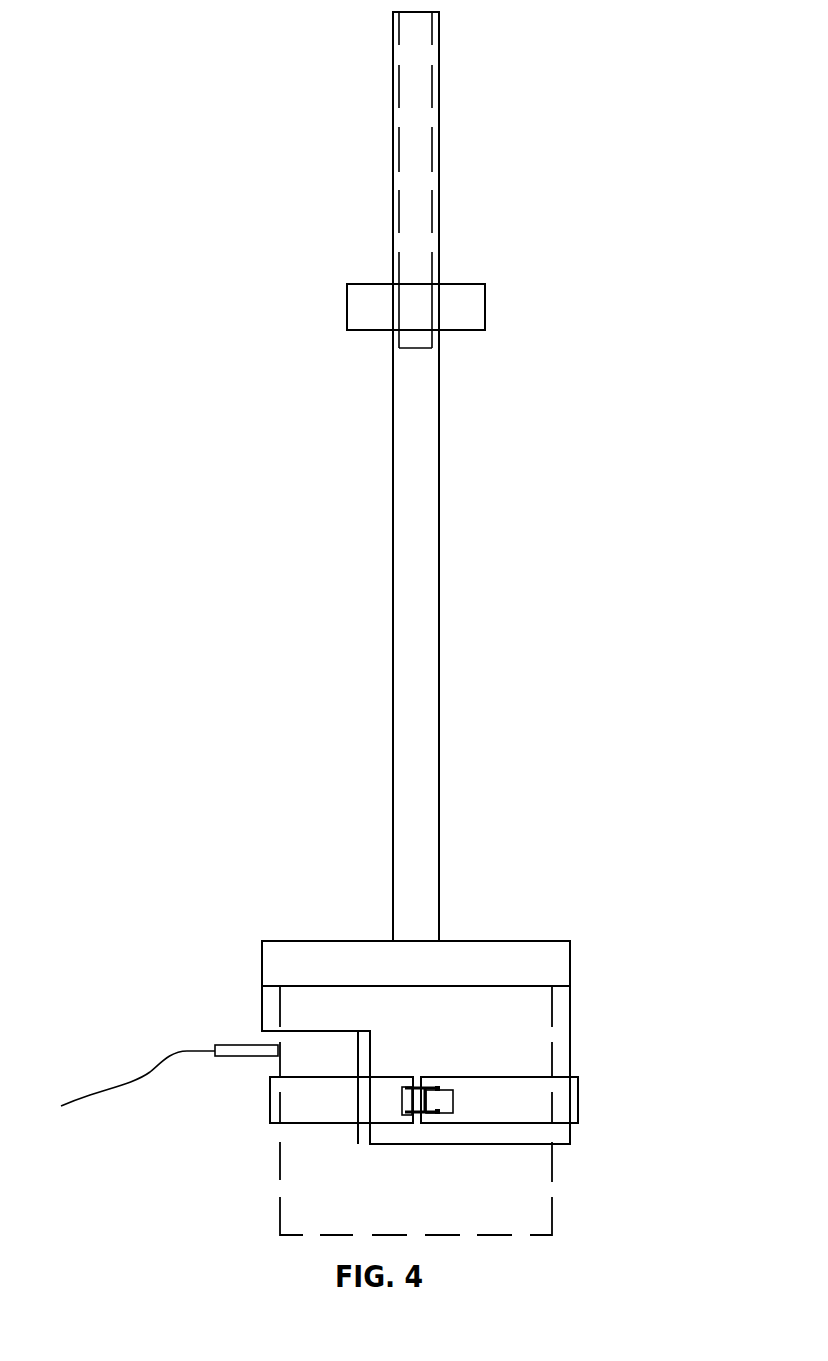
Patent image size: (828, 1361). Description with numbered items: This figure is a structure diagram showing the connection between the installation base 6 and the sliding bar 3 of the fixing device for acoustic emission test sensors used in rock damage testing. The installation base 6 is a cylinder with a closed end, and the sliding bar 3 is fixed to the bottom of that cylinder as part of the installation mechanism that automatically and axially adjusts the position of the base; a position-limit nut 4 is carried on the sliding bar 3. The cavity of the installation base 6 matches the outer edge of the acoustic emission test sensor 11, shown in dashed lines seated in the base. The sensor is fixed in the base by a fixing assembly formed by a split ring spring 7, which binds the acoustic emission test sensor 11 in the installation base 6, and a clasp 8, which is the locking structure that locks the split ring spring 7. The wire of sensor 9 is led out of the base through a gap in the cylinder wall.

The sliding bar 3 is at (417, 145).
The position-limit nut 4 is at (375, 308).
The installation base 6 is at (562, 1032).
The split ring spring 7 is at (523, 1101).
The clasp 8 is at (437, 1098).
The wire of sensor 9 is at (142, 1067).
The acoustic emission test sensor 11 is at (303, 1203).